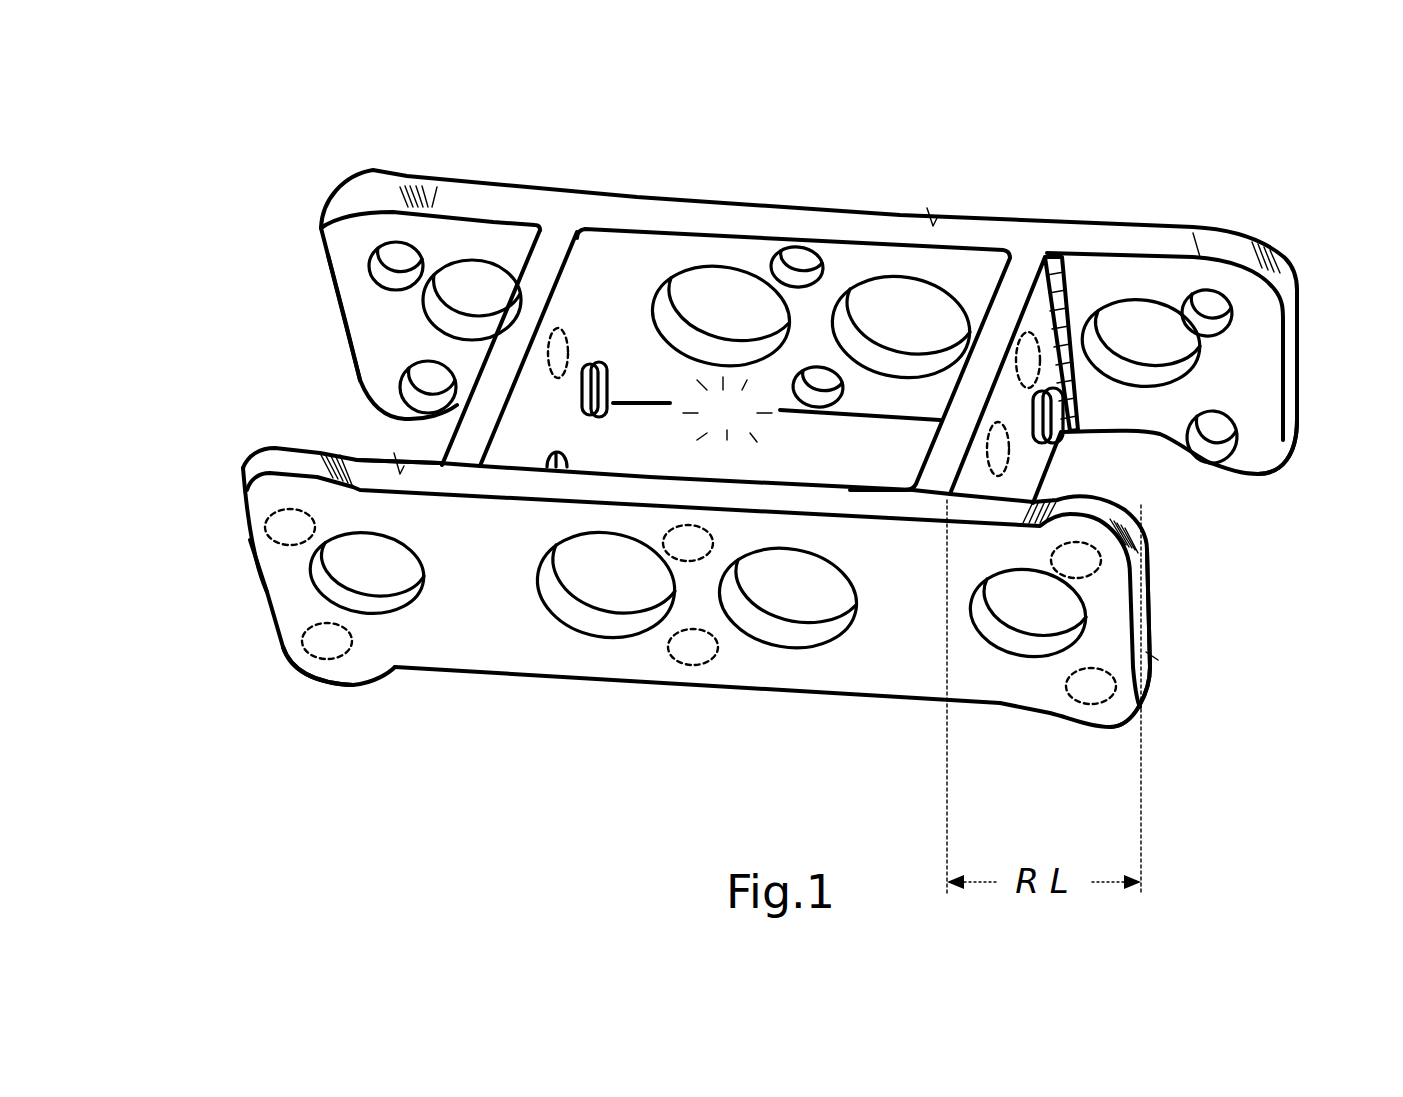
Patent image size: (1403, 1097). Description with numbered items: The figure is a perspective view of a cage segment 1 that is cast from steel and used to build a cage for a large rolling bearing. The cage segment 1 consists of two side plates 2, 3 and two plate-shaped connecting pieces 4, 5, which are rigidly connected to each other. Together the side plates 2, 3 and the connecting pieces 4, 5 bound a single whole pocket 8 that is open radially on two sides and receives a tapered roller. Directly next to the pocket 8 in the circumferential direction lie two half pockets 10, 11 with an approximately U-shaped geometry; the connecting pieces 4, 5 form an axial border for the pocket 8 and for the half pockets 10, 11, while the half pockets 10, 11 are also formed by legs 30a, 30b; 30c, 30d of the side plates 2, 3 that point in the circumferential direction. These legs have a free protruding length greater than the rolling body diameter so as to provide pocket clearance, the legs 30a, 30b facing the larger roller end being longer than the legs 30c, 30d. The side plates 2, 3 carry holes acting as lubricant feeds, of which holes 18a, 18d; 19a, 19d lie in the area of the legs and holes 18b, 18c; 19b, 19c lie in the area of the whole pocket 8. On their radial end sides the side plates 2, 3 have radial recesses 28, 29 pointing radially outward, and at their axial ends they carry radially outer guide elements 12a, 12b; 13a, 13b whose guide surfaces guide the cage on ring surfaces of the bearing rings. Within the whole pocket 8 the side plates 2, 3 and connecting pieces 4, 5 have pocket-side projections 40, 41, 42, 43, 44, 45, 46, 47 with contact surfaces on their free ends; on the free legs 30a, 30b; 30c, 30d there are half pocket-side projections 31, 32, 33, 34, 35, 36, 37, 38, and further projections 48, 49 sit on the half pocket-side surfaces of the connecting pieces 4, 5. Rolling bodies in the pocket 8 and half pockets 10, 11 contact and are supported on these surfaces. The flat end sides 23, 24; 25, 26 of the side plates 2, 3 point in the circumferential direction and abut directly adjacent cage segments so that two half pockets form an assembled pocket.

The cage segment 1 is at (265, 168).
The side plate 2 is at (902, 212).
The side plate 3 is at (887, 700).
The connecting piece 4 is at (545, 253).
The connecting piece 5 is at (1021, 277).
The pocket 8 is at (727, 409).
The half pocket 10 is at (268, 378).
The half pocket 11 is at (1250, 556).
The radially outer guide element 12a is at (370, 172).
The radially outer guide element 12b is at (1230, 228).
The radially outer guide element 13a is at (265, 490).
The radially outer guide element 13b is at (1077, 493).
The hole 18a is at (469, 262).
The hole 18b is at (670, 273).
The hole 18c is at (873, 275).
The hole 18d is at (1160, 327).
The hole 19a is at (389, 613).
The hole 19b is at (603, 637).
The hole 19c is at (780, 647).
The hole 19d is at (1030, 655).
The end side 23 is at (332, 302).
The end side 24 is at (1298, 300).
The end side 25 is at (268, 614).
The end side 26 is at (1157, 660).
The radial recess 28 is at (940, 207).
The radial recess 29 is at (392, 462).
The leg 30a is at (353, 347).
The leg 30b is at (1258, 444).
The leg 30c is at (320, 680).
The leg 30d is at (1145, 702).
The half pocket-side projection 31 is at (382, 247).
The half pocket-side projection 32 is at (403, 377).
The half pocket-side projection 33 is at (1227, 330).
The half pocket-side projection 34 is at (1208, 445).
The half pocket-side projection 35 is at (277, 543).
The half pocket-side projection 36 is at (307, 647).
The half pocket-side projection 37 is at (1093, 573).
The half pocket-side projection 38 is at (1082, 705).
The pocket-side projection 40 is at (773, 247).
The pocket-side projection 41 is at (797, 390).
The pocket-side projection 42 is at (713, 537).
The pocket-side projection 43 is at (707, 663).
The pocket-side projection 44 is at (605, 360).
The pocket-side projection 45 is at (575, 462).
The pocket-side projection 46 is at (1016, 345).
The pocket-side projection 47 is at (986, 463).
The projection 48 is at (549, 370).
The projection 49 is at (1055, 405).